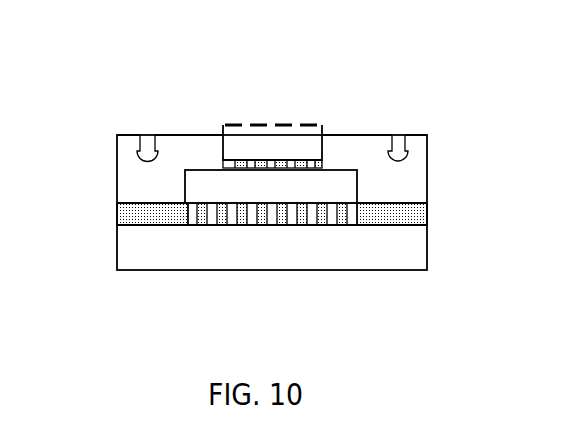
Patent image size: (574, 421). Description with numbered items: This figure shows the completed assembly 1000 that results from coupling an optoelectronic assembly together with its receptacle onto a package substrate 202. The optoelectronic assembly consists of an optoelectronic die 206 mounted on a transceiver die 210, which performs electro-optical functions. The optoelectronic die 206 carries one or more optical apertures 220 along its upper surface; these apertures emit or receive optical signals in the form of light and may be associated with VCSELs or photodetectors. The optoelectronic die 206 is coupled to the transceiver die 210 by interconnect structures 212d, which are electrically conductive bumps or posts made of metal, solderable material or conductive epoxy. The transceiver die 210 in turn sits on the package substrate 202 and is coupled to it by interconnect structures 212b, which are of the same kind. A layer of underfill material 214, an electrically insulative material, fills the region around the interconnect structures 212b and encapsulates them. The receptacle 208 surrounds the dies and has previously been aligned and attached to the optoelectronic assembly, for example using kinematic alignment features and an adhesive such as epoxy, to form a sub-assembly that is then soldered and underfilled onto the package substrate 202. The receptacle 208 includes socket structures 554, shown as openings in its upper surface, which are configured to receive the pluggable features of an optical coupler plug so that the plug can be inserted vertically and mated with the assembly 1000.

The assembly 1000 is at (368, 72).
The package substrate 202 is at (182, 262).
The optoelectronic die 206 is at (290, 154).
The receptacle 208 is at (170, 194).
The transceiver die 210 is at (294, 200).
The interconnect structures 212b is at (357, 226).
The interconnect structures 212d is at (319, 168).
The underfill material 214 is at (117, 213).
The optical apertures 220 is at (260, 124).
The socket structures 554 is at (147, 143).